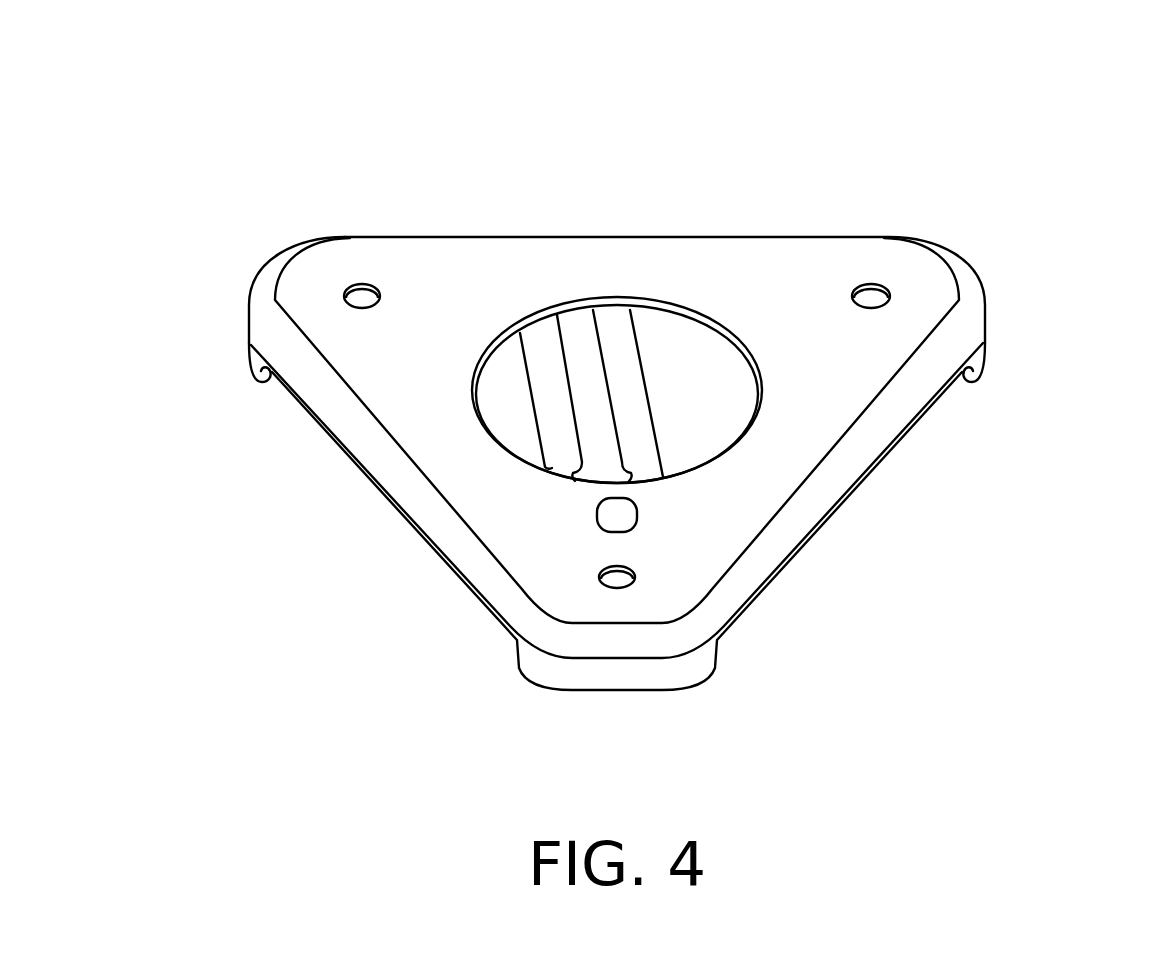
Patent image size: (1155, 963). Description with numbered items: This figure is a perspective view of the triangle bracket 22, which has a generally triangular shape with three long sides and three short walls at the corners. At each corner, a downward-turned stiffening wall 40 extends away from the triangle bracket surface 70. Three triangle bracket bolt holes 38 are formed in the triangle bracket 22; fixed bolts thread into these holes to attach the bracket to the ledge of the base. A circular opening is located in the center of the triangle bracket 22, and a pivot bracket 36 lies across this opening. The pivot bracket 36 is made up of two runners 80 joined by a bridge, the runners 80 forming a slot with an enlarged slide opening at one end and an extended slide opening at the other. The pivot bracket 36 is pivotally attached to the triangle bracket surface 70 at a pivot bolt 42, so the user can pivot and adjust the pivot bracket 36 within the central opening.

The triangle bracket 22 is at (875, 217).
The triangle bracket surface 70 is at (513, 272).
The stiffening wall 40 is at (248, 350).
The pivot bracket 36 is at (660, 405).
The runners 80 is at (538, 358).
The triangle bracket bolt holes 38 is at (345, 290).
The pivot bolt 42 is at (637, 520).